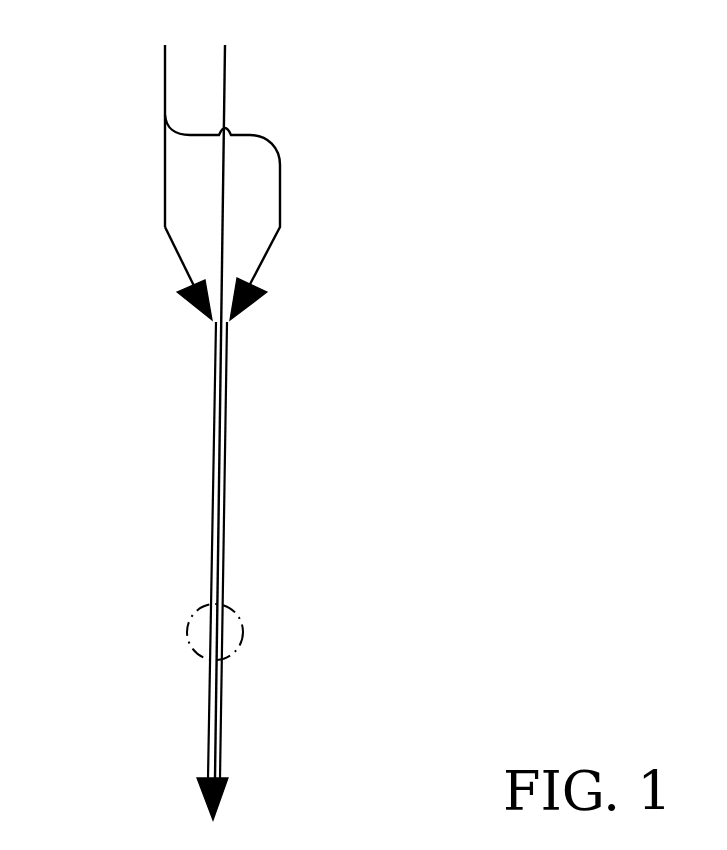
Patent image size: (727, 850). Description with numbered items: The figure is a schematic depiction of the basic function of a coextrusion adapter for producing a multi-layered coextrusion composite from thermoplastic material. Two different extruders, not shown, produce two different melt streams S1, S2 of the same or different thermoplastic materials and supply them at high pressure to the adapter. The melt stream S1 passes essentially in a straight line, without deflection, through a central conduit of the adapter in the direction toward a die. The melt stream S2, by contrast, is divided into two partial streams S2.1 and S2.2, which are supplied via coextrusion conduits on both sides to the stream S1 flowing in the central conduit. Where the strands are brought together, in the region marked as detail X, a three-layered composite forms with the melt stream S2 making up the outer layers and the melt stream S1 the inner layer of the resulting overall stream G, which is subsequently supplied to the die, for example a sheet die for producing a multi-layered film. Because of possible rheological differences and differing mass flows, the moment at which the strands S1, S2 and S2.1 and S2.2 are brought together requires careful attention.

The melt stream S1 is at (226, 70).
The melt stream S2 is at (163, 75).
The partial stream S2.1 is at (165, 242).
The partial stream S2.2 is at (280, 202).
The detail X is at (232, 605).
The overall stream G is at (218, 735).